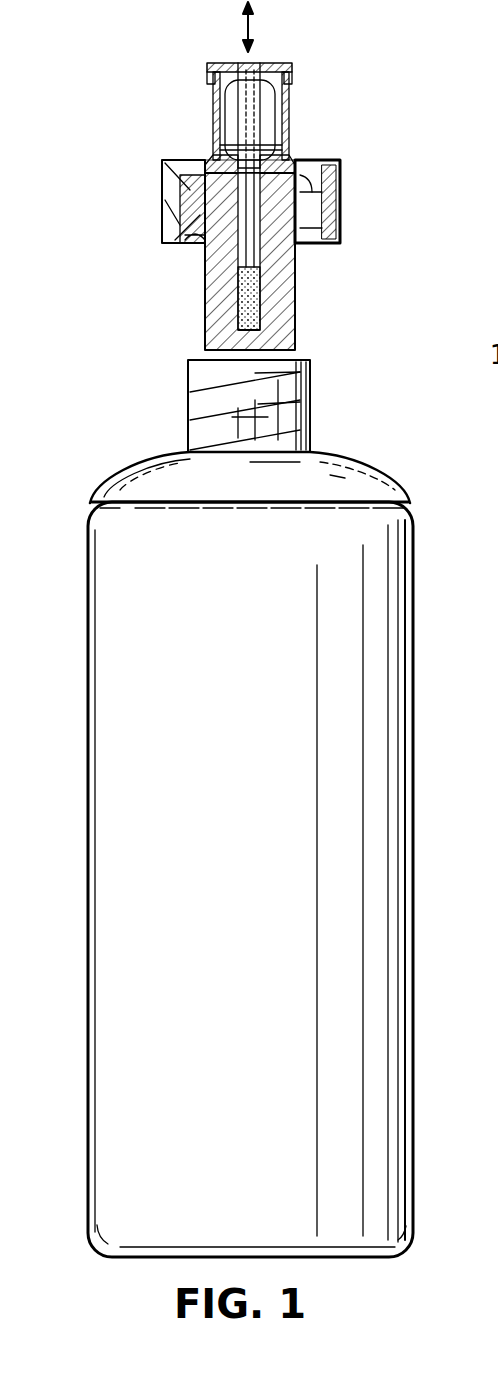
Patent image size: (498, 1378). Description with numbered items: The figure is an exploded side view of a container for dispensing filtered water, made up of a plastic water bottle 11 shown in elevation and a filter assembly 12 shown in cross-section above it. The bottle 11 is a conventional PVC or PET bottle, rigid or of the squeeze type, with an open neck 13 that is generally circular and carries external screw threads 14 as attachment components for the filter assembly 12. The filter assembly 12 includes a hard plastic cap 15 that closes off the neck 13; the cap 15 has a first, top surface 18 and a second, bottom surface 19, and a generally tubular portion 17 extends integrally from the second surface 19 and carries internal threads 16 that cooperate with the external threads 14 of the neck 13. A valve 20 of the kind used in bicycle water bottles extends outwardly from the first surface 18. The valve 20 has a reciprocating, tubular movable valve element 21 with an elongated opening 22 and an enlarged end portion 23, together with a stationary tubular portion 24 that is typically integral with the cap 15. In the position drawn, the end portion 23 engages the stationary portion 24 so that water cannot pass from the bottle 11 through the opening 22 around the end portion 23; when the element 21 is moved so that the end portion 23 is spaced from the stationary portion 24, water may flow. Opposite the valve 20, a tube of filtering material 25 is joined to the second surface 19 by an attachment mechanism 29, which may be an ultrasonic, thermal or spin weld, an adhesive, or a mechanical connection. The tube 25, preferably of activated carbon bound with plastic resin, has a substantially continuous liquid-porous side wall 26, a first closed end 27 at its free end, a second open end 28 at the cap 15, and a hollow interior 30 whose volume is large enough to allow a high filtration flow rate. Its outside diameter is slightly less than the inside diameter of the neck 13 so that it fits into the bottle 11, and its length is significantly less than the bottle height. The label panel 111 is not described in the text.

The plastic water bottle 11 is at (372, 836).
The label panel of container 111 is at (497, 1015).
The filter assembly 12 is at (155, 57).
The open neck 13 is at (350, 430).
The external screw threads 14 is at (280, 403).
The cap 15 is at (150, 160).
The internal threads 16 is at (196, 240).
The generally tubular portion 17 is at (330, 214).
The first surface 18 is at (290, 158).
The second surface 19 is at (305, 187).
The valve 20 is at (228, 87).
The movable valve element 21 is at (246, 185).
The elongated opening 22 is at (250, 101).
The enlarged end portion 23 is at (236, 65).
The stationary tubular portion 24 is at (214, 118).
The tube of filtering material 25 is at (211, 261).
The liquid-porous side wall 26 is at (295, 290).
The first closed end 27 is at (253, 333).
The second open end 28 is at (214, 155).
The attachment mechanism 29 is at (190, 195).
The hollow interior 30 is at (252, 320).